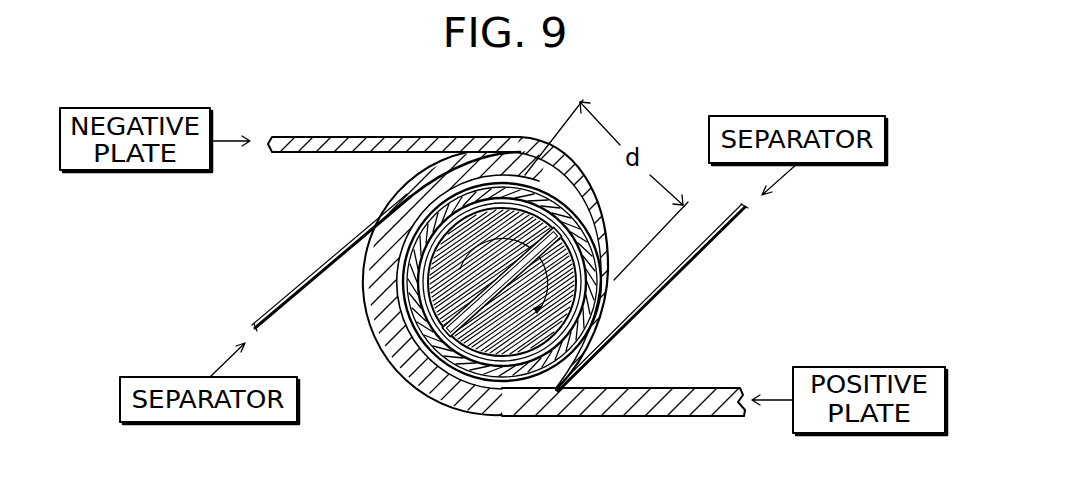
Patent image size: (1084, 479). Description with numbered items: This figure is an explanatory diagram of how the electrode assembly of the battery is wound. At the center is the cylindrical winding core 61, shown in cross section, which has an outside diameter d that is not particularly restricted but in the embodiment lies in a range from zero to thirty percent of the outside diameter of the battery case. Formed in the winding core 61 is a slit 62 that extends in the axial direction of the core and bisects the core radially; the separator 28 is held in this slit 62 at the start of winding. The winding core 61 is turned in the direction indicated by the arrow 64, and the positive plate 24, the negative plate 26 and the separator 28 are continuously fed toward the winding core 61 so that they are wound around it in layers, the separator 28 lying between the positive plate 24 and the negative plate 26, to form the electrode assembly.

The positive plate 24 is at (635, 408).
The negative plate 26 is at (378, 147).
The separator 28 is at (308, 278).
The winding core 61 is at (505, 340).
The slit 62 is at (408, 370).
The arrow 64 is at (403, 303).